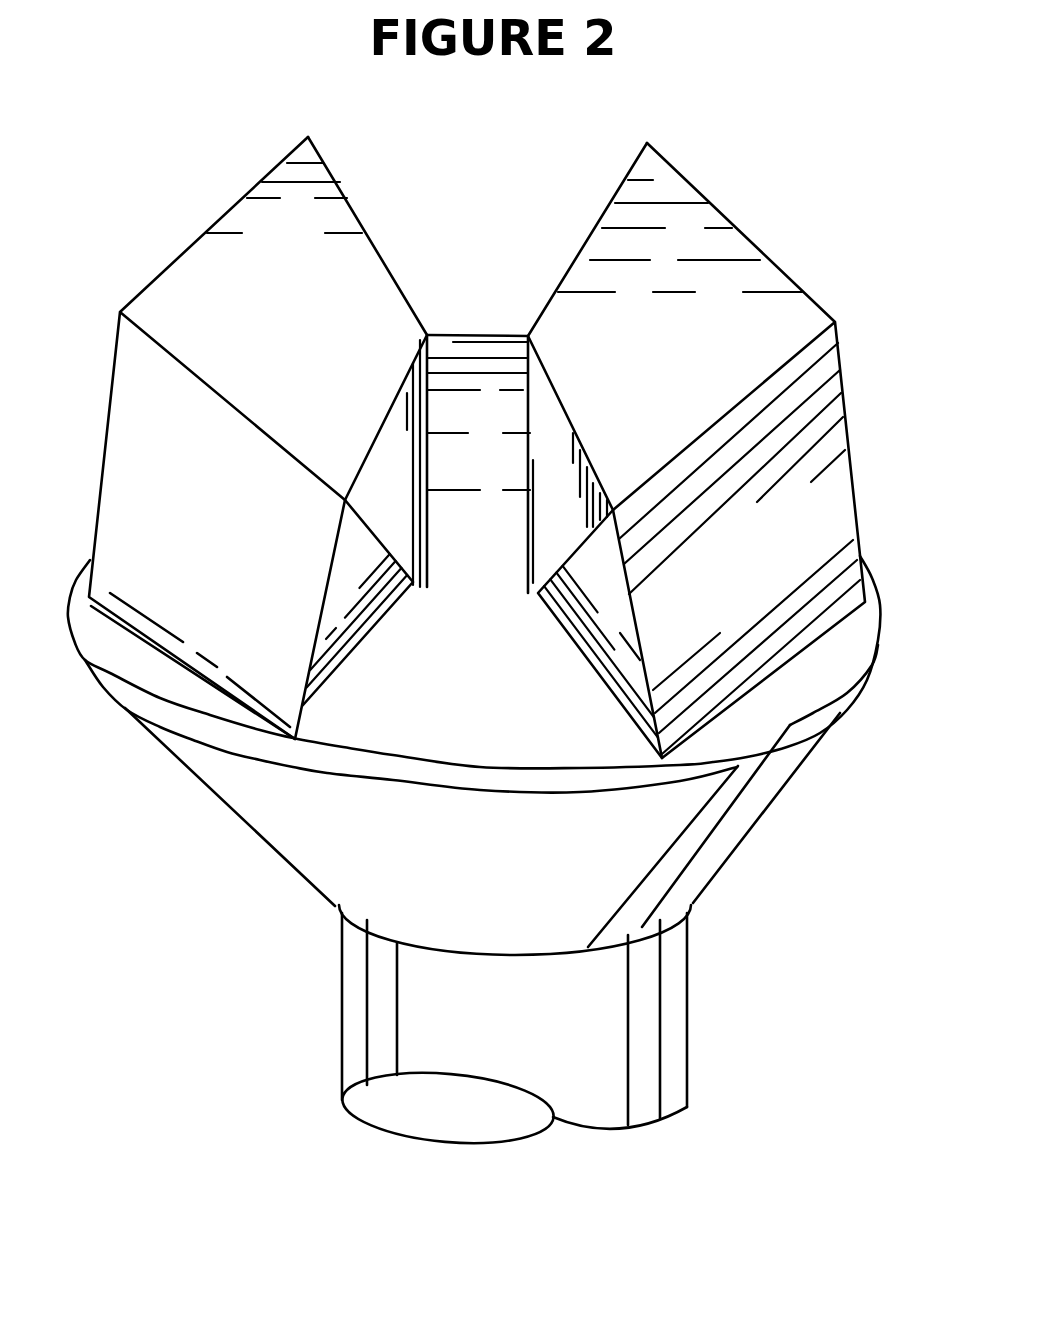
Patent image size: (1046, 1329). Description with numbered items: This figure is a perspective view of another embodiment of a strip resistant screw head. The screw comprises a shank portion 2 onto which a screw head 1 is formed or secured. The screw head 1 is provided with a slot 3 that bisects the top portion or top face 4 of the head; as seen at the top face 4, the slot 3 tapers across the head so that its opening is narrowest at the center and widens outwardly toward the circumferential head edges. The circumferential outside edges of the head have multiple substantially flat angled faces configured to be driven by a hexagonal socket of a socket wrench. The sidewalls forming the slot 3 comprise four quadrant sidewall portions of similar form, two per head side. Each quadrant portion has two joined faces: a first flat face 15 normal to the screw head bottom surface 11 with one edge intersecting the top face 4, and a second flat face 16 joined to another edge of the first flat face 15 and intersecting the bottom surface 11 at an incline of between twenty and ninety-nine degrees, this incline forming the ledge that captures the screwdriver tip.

The screw head 1 is at (813, 740).
The shank portion 2 is at (672, 1000).
The slot 3 is at (468, 187).
The top face 4 is at (203, 292).
The screw head bottom surface 11 is at (378, 732).
The first flat face 15 is at (385, 500).
The second flat face 16 is at (355, 560).